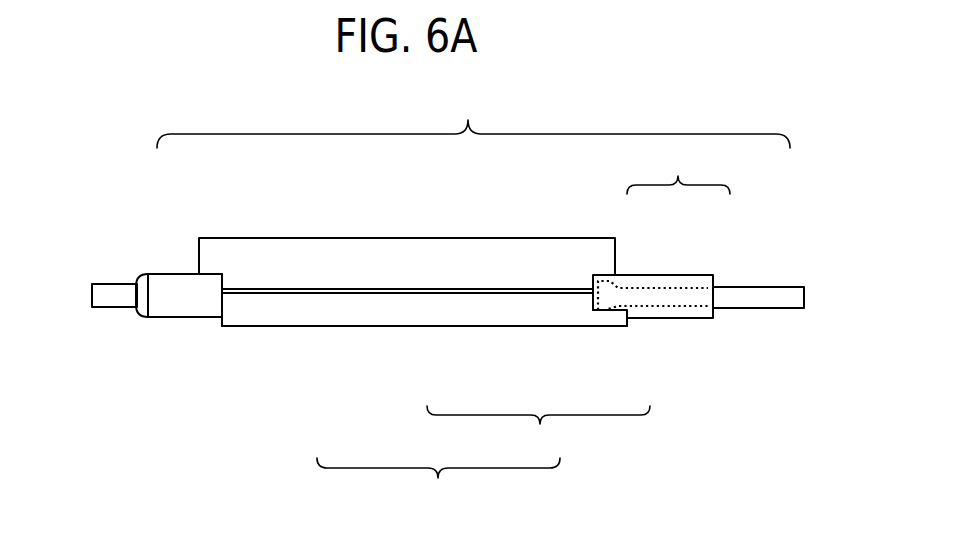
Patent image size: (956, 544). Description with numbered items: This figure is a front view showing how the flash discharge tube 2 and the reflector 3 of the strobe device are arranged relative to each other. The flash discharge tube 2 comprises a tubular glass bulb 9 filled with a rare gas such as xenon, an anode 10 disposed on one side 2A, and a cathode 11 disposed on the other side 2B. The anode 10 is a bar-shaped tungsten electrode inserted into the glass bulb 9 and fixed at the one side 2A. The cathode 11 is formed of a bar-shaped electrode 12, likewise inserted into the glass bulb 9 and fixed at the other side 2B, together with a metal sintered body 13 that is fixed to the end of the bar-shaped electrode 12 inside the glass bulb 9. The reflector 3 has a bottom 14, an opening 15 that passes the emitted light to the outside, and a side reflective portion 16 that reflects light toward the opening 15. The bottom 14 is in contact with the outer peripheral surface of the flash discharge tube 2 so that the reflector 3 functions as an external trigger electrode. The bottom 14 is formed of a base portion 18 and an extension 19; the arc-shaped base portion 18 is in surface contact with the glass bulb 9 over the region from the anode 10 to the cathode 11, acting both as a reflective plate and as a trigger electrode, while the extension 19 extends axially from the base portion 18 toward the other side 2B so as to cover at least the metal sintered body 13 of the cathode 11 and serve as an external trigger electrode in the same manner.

The flash discharge tube 2 is at (473, 118).
The one side 2A is at (167, 272).
The other side 2B is at (700, 273).
The reflector 3 is at (438, 487).
The tubular glass bulb 9 is at (202, 288).
The anode 10 is at (107, 292).
The cathode 11 is at (678, 170).
The bar-shaped electrode 12 is at (687, 286).
The metal sintered body 13 is at (614, 278).
The bottom 14 is at (538, 436).
The opening 15 is at (363, 239).
The side reflective portion 16 is at (388, 265).
The base portion 18 is at (432, 316).
The extension 19 is at (612, 320).